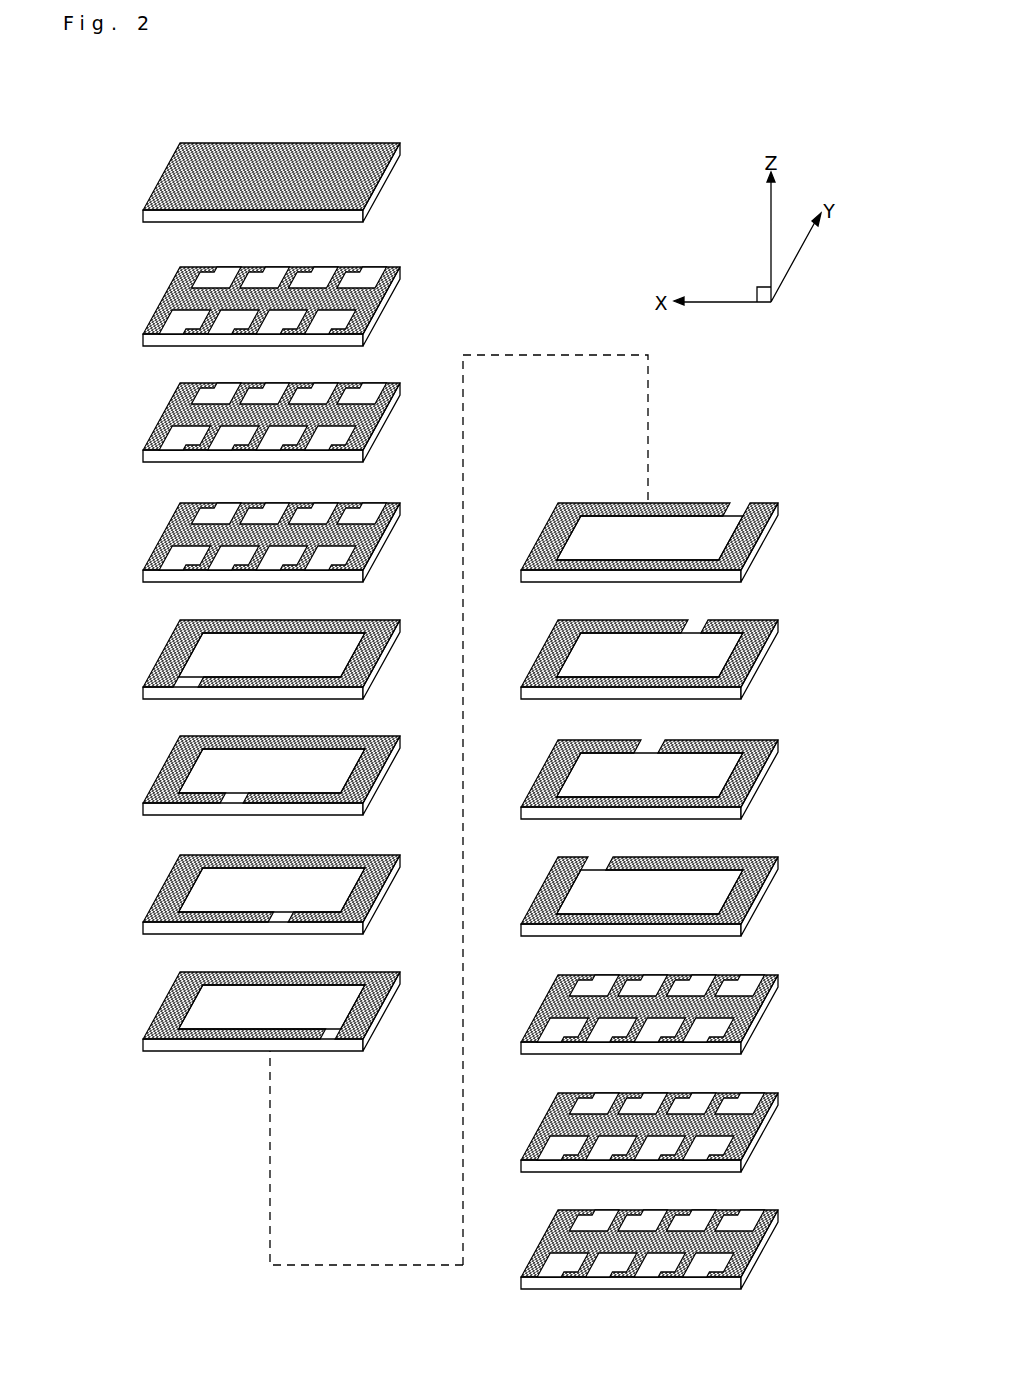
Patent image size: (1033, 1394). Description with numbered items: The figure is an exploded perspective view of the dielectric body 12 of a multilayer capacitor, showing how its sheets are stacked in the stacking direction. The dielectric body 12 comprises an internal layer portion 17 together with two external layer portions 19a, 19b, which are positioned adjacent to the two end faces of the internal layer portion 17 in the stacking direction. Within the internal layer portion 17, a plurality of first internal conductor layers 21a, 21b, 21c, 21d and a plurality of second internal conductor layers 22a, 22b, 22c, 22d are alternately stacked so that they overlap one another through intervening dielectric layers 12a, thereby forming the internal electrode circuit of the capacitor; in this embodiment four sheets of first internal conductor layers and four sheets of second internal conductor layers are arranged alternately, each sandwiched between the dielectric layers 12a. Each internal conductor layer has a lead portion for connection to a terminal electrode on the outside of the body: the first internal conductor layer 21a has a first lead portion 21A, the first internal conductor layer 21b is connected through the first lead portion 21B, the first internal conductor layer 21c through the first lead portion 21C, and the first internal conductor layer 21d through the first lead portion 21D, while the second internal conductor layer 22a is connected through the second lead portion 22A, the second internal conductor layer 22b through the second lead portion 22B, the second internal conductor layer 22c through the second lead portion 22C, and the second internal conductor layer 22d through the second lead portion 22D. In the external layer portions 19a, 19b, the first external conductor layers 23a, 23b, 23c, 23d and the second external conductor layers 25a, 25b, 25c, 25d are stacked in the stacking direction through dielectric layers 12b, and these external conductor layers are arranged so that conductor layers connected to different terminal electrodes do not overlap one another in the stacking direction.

The dielectric body 12 is at (838, 1313).
The dielectric layer 12a is at (370, 534).
The dielectric layer 12b is at (367, 177).
The internal layer portion 17 is at (120, 615).
The external layer portion 19a is at (120, 133).
The external layer portion 19b is at (790, 960).
The first lead portion 21A is at (604, 861).
The first internal conductor layer 21a is at (696, 888).
The first lead portion 21B is at (695, 633).
The first internal conductor layer 21b is at (602, 648).
The first lead portion 21C is at (328, 1030).
The first internal conductor layer 21c is at (216, 1010).
The first lead portion 21D is at (226, 795).
The first internal conductor layer 21d is at (312, 778).
The second lead portion 22A is at (652, 746).
The second internal conductor layer 22a is at (602, 768).
The second lead portion 22B is at (738, 514).
The second internal conductor layer 22b is at (602, 527).
The second lead portion 22C is at (278, 914).
The second internal conductor layer 22c is at (227, 900).
The second lead portion 22D is at (182, 680).
The second internal conductor layer 22d is at (312, 662).
The first external conductor layer 23a is at (207, 276).
The first external conductor layer 23b is at (313, 280).
The first external conductor layer 23c is at (337, 318).
The first external conductor layer 23d is at (232, 325).
The second external conductor layer 25a is at (262, 280).
The second external conductor layer 25b is at (355, 280).
The second external conductor layer 25c is at (278, 325).
The second external conductor layer 25d is at (180, 330).